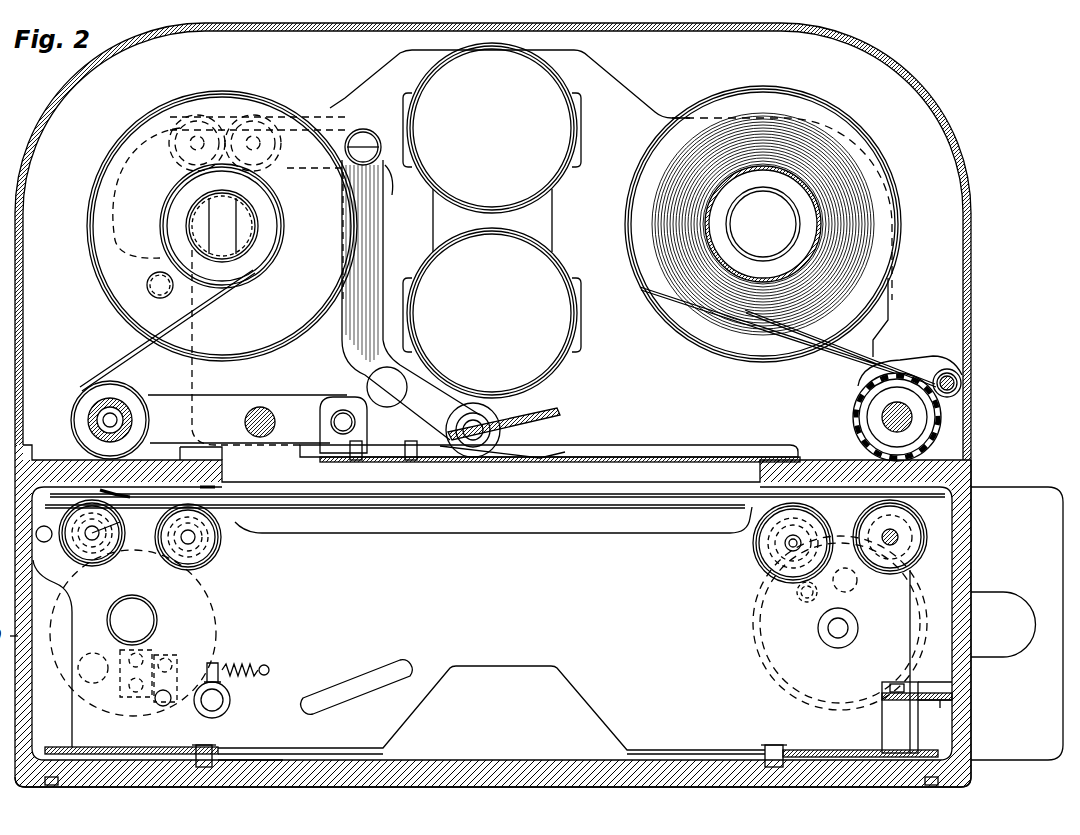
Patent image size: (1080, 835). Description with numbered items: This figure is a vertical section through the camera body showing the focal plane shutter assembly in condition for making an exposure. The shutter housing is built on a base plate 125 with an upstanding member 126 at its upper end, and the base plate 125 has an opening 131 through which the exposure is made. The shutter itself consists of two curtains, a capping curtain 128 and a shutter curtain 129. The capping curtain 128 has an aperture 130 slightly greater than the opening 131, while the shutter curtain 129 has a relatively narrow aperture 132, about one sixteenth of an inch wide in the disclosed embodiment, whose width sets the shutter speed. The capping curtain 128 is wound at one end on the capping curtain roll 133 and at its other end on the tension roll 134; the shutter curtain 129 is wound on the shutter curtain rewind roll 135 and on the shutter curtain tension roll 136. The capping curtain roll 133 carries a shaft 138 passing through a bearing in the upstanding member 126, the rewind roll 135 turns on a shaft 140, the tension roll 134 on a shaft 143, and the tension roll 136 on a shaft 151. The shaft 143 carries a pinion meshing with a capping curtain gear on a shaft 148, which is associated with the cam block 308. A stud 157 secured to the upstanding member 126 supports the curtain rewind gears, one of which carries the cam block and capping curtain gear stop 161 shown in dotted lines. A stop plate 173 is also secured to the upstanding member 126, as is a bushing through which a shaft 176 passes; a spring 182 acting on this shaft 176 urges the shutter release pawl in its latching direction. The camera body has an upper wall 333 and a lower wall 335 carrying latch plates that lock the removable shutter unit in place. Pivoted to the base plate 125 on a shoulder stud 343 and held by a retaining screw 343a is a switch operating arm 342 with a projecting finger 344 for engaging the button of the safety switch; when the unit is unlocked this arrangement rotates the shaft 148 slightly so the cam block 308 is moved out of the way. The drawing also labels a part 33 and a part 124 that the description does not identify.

The mounting tab 33 is at (1012, 487).
The base plate 124 is at (660, 470).
The base plate 125 is at (138, 750).
The upper upstanding member 126 is at (620, 718).
The capping curtain 128 is at (785, 545).
The shutter curtain 129 is at (480, 498).
The aperture 130 is at (577, 500).
The opening 131 is at (212, 748).
The aperture 132 is at (125, 505).
The capping curtain roll 133 is at (222, 520).
The capping curtain tension roll 134 is at (760, 553).
The shutter curtain rewind roll 135 is at (120, 562).
The shutter curtain tension roll 136 is at (915, 555).
The shaft 138 is at (210, 540).
The shaft 140 is at (124, 523).
The shaft 143 is at (800, 560).
The shaft 148 is at (838, 638).
The shaft 151 is at (900, 528).
The stud 157 is at (145, 620).
The cam block and capping curtain gear stop 161 is at (118, 690).
The stop plate 173 is at (168, 708).
The shaft 176 is at (232, 700).
The spring 182 is at (246, 659).
The cam block 308 is at (812, 603).
The upper wall 333 is at (64, 472).
The lower wall 335 is at (848, 770).
The switch operating arm 342 is at (893, 684).
The shoulder stud 343 is at (865, 738).
The retaining screw 343a is at (925, 690).
The projecting finger 344 is at (940, 704).